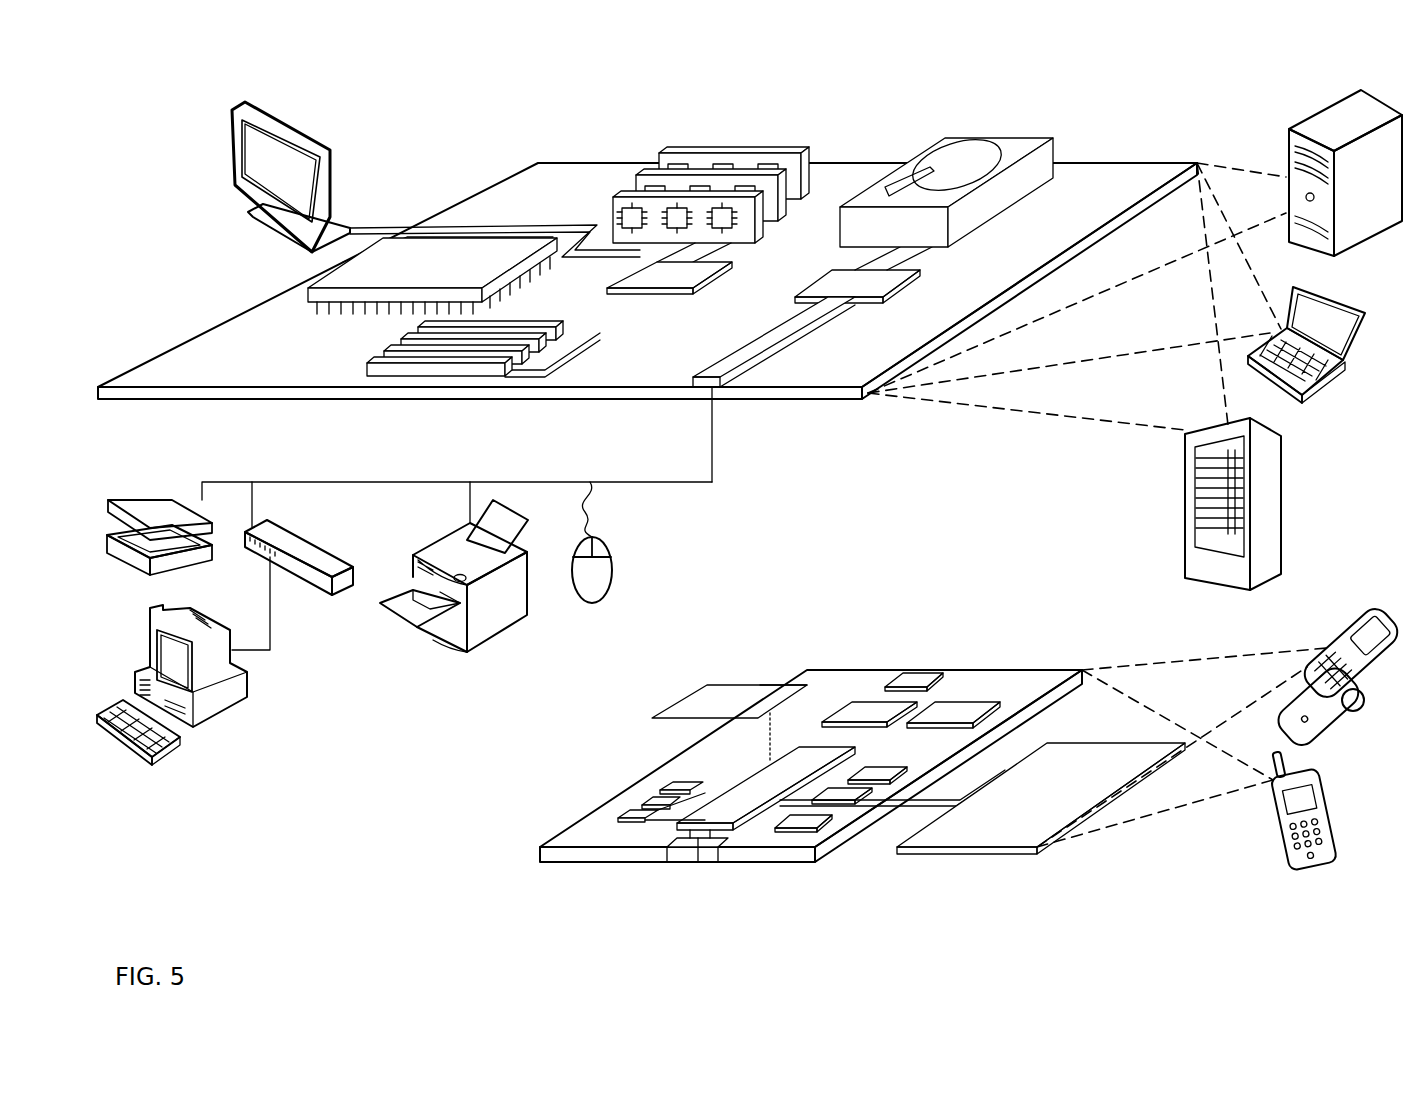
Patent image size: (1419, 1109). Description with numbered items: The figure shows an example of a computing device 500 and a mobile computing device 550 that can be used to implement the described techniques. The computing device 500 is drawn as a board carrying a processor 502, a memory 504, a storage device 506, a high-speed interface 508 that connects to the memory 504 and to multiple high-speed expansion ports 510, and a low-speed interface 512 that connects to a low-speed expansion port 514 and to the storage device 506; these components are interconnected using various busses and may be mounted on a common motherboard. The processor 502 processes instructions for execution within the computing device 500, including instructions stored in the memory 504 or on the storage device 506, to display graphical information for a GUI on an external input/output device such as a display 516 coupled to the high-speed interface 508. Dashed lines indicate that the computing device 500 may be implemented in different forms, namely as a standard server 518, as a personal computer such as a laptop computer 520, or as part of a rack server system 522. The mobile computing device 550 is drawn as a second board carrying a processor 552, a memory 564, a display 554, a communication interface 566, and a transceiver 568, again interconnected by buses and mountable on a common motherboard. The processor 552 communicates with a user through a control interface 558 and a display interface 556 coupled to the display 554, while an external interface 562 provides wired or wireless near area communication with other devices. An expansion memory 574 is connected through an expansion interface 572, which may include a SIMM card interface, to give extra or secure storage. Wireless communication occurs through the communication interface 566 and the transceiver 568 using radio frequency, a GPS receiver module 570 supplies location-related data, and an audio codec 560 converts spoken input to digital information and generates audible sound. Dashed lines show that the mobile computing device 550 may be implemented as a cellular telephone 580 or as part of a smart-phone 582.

The computing device 500 is at (450, 130).
The processor 502 is at (300, 295).
The memory 504 is at (676, 154).
The storage device 506 is at (934, 144).
The high-speed interface 508 is at (645, 274).
The high-speed expansion ports 510 is at (393, 355).
The low-speed interface 512 is at (838, 280).
The low-speed expansion port 514 is at (725, 392).
The display 516 is at (233, 106).
The standard server 518 is at (1287, 147).
The laptop computer 520 is at (1320, 394).
The rack server system 522 is at (1185, 532).
The mobile computing device 550 is at (510, 860).
The processor 552 is at (735, 814).
The display 554 is at (997, 833).
The display interface 556 is at (810, 830).
The control interface 558 is at (848, 803).
The audio codec 560 is at (877, 776).
The external interface 562 is at (695, 850).
The memory 564 is at (640, 804).
The communication interface 566 is at (868, 712).
The transceiver 568 is at (953, 712).
The GPS receiver module 570 is at (926, 672).
The expansion interface 572 is at (793, 685).
The expansion memory 574 is at (708, 685).
The cellular telephone 580 is at (1338, 619).
The smart-phone 582 is at (1272, 822).